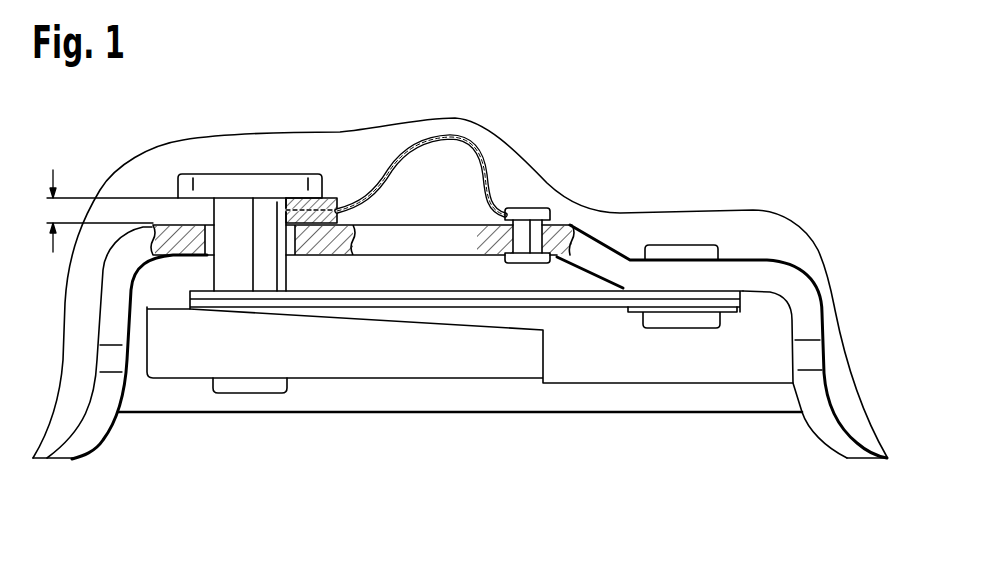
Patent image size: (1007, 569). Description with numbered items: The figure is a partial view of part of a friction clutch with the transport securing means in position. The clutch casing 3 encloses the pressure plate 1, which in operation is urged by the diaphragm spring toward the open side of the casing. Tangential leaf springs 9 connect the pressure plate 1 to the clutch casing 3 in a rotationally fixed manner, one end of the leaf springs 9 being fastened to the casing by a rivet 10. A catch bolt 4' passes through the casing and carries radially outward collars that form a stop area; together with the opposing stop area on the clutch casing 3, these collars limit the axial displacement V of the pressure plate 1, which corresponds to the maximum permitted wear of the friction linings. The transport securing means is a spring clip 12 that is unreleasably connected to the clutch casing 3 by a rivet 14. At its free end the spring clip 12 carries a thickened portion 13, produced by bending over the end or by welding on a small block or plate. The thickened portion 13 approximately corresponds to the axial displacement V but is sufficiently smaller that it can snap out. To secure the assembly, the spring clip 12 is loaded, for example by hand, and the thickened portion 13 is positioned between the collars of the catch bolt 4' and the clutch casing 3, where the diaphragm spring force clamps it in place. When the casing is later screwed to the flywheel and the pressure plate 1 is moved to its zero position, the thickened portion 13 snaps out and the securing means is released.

The pressure plate 1 is at (202, 343).
The clutch casing 3 is at (623, 275).
The catch bolt 4' is at (250, 233).
The tangential leaf springs 9 is at (580, 303).
The rivet 10 is at (688, 252).
The spring clip 12 is at (468, 147).
The thickened portion 13 is at (333, 201).
The rivet 14 is at (530, 213).
The axial displacement V is at (99, 211).